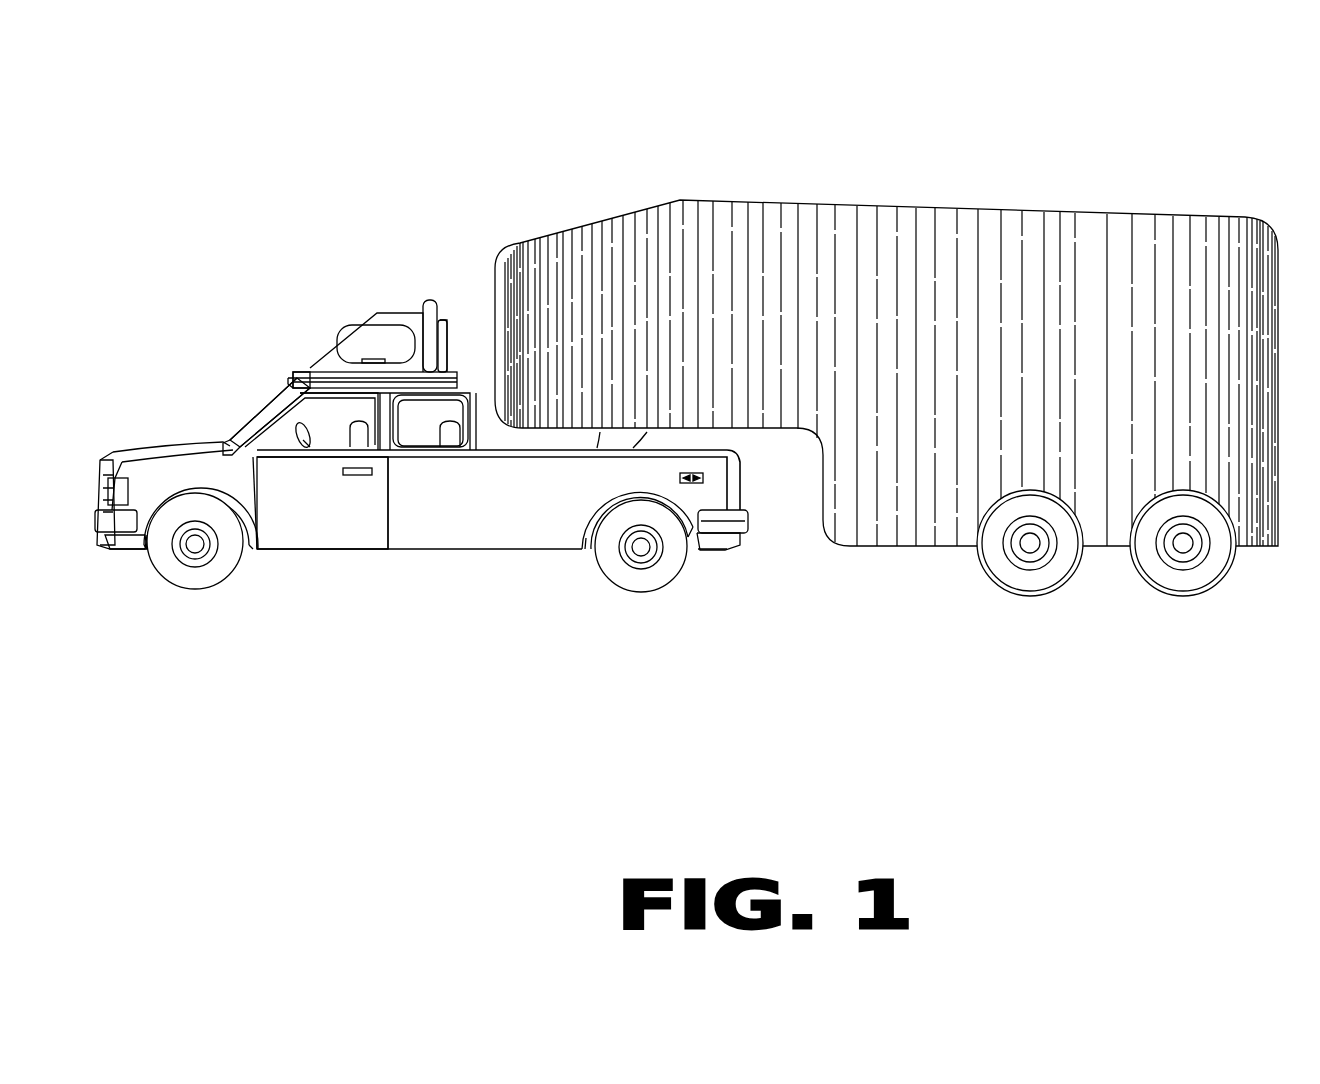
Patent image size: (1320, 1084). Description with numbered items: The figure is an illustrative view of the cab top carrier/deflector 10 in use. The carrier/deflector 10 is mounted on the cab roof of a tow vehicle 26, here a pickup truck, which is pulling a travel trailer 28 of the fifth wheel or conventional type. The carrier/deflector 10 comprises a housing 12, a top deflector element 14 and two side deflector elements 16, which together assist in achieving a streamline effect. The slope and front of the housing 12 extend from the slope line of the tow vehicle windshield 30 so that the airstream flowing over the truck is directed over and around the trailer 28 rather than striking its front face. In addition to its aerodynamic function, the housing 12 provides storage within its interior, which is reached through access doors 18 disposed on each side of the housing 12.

The cab top carrier/deflector 10 is at (318, 272).
The housing 12 is at (400, 317).
The top deflector element 14 is at (340, 336).
The side deflector elements 16 is at (437, 372).
The access doors 18 is at (357, 344).
The tow vehicle 26 is at (320, 520).
The travel trailer 28 is at (962, 220).
The tow vehicle windshield 30 is at (288, 401).